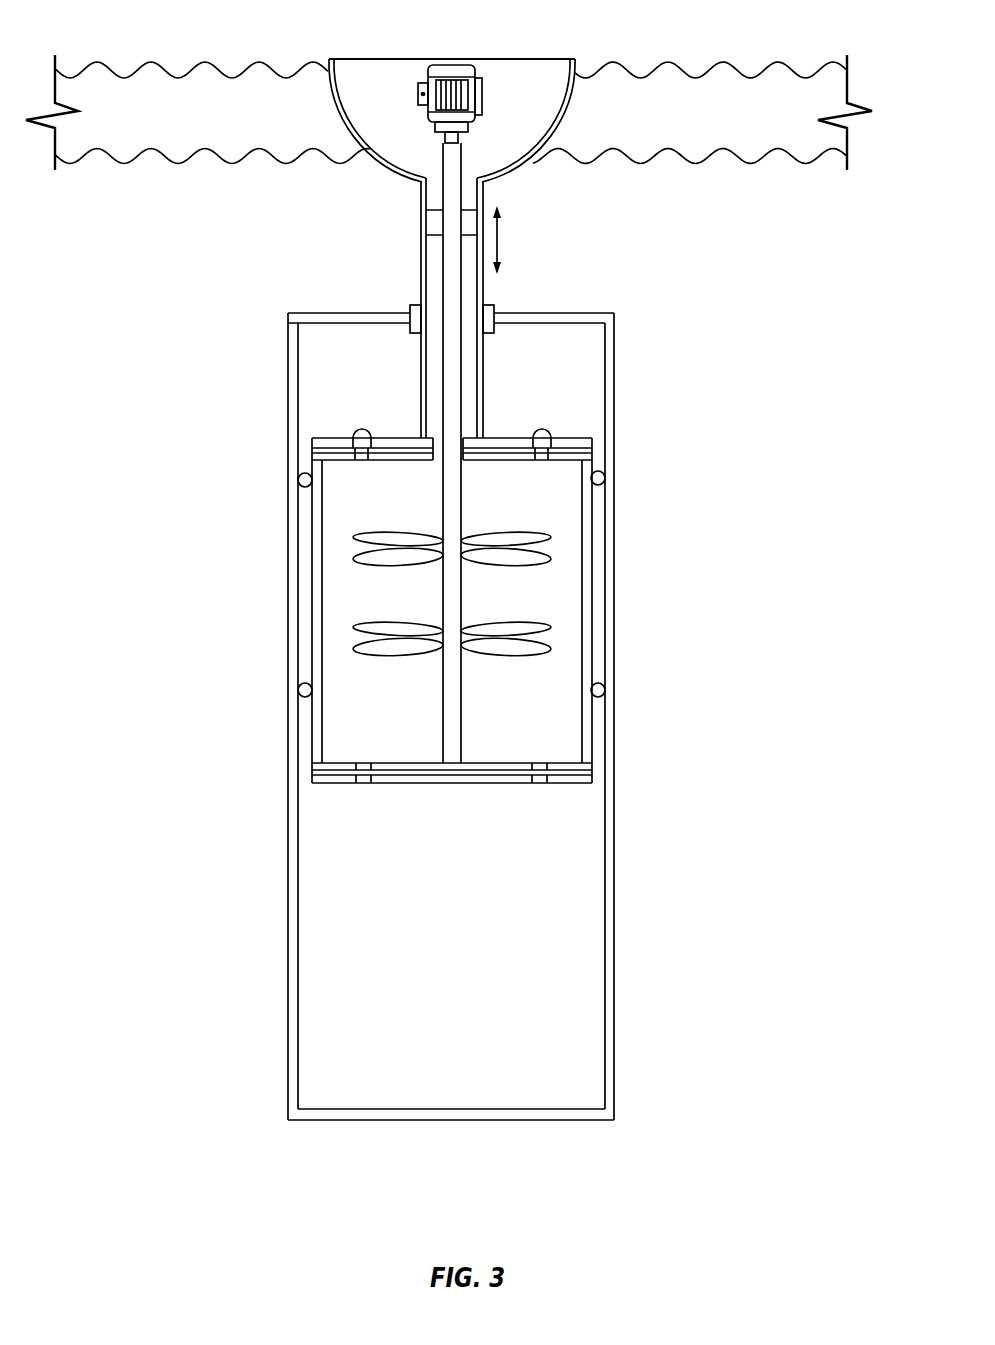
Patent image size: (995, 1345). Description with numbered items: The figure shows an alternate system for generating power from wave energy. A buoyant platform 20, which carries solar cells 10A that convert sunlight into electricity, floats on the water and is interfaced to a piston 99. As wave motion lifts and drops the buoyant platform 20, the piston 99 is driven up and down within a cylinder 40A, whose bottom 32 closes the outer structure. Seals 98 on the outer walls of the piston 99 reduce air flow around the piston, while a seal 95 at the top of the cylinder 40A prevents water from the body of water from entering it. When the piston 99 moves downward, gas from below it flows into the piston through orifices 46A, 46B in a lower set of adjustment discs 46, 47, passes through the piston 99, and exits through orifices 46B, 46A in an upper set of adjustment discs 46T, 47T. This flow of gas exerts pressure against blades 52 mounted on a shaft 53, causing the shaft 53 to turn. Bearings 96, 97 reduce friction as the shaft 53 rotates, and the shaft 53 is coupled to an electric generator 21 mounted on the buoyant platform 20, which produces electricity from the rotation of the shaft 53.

The solar cells 10A is at (530, 59).
The buoyant platform 20 is at (561, 120).
The electric generator 21 is at (430, 119).
The bearing 96 is at (428, 222).
The seal 95 is at (415, 305).
The cylinder 40A is at (619, 975).
The container bottom 32 is at (540, 1120).
The piston 99 is at (582, 590).
The adjustment disc 46T is at (585, 443).
The adjustment disc 47T is at (585, 452).
The bearing 97 is at (433, 462).
The orifice 46A is at (358, 430).
The orifice 46B is at (361, 464).
The seal 98 is at (298, 480).
The shaft 53 is at (443, 690).
The blades 52 is at (368, 562).
The adjustment disc 46 is at (572, 767).
The adjustment disc 47 is at (567, 783).